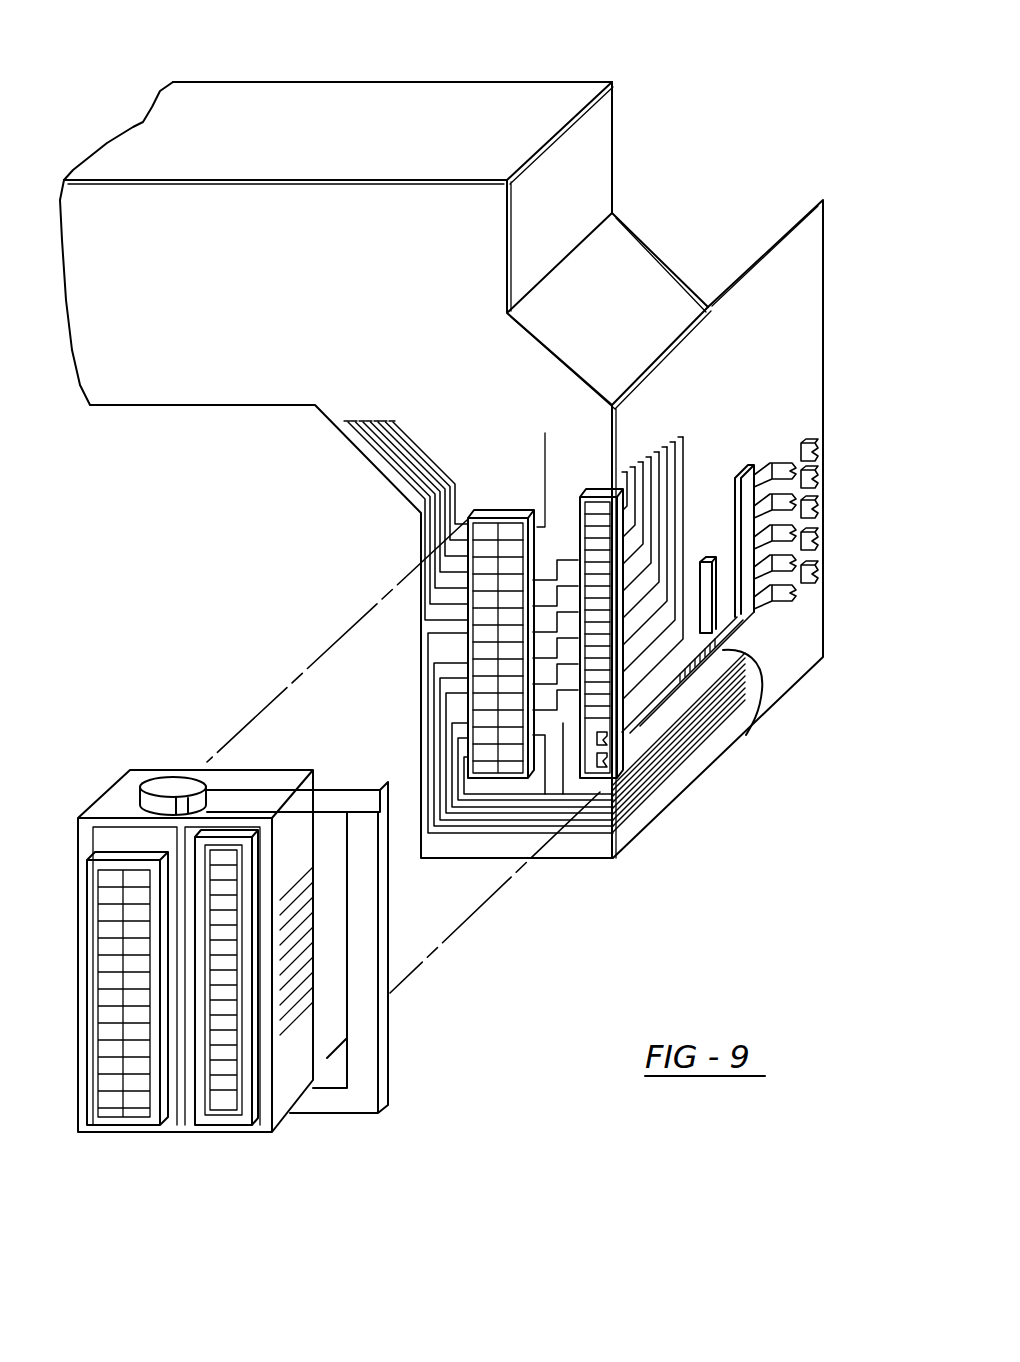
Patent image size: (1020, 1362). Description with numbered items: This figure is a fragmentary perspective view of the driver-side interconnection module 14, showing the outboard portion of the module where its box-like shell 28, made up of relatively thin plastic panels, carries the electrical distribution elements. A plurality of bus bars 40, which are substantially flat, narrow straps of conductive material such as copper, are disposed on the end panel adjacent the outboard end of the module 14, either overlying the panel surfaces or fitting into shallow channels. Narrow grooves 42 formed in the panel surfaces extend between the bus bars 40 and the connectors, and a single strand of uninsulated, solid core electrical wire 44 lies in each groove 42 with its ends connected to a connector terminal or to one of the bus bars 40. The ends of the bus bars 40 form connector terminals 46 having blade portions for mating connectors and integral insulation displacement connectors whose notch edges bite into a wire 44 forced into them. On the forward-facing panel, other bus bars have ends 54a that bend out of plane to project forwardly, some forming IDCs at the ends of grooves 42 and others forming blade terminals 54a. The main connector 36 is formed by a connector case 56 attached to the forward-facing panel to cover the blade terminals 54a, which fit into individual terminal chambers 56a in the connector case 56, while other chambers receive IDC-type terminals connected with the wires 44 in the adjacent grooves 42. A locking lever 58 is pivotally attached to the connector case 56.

The driver-side interconnection module 14 is at (147, 98).
The box-like shell 28 is at (571, 84).
The electrical wire 44 is at (398, 448).
The grooves 42 is at (431, 488).
The bus bars 40 is at (748, 468).
The connector terminals 46 is at (820, 512).
The bus bar blade terminals 54a is at (607, 762).
The main connector 36 is at (297, 1136).
The connector case 56 is at (106, 778).
The terminal chambers 56a is at (213, 1122).
The locking lever 58 is at (358, 1112).